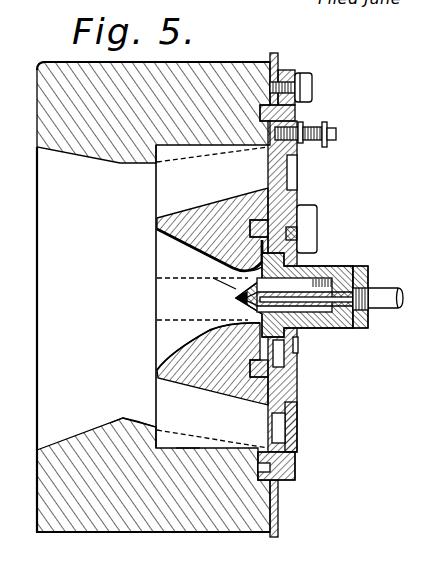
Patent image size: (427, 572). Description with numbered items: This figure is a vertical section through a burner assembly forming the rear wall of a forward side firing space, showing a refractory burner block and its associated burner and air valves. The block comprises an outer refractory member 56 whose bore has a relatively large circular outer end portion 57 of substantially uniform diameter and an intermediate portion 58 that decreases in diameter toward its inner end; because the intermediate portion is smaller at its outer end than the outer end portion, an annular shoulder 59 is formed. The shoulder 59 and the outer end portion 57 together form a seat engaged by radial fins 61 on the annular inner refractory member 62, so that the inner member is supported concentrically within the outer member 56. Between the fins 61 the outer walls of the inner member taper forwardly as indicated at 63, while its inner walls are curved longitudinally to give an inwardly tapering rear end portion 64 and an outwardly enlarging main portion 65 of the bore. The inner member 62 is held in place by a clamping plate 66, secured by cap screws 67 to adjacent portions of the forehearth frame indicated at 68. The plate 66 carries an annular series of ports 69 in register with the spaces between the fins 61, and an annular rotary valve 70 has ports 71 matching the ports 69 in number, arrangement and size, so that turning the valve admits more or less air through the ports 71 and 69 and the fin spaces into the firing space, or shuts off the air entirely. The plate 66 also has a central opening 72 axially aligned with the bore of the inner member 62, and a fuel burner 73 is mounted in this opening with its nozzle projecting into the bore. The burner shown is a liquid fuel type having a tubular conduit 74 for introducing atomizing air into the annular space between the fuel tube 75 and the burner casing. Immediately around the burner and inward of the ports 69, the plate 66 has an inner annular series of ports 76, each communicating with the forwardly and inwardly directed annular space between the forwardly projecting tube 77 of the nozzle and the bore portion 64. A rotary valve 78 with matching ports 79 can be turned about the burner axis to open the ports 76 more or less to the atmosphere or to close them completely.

The outer refractory member 56 is at (224, 513).
The outer end portion 57 is at (176, 448).
The intermediate portion 58 is at (123, 417).
The annular shoulder 59 is at (160, 432).
The radial fins 61 is at (172, 188).
The inner refractory member 62 is at (178, 224).
The forwardly tapering outer walls 63 is at (208, 207).
The inwardly tapering rear end portion 64 is at (213, 278).
The outwardly enlarging main portion 65 is at (187, 345).
The clamping plate 66 is at (287, 385).
The cap screws 67 is at (303, 87).
The forehearth frame parts 68 is at (278, 60).
The ports 69 is at (278, 433).
The annular rotary valve 70 is at (297, 423).
The ports 71 is at (294, 166).
The central opening 72 is at (308, 265).
The fuel burner 73 is at (355, 264).
The tubular conduit 74 is at (369, 272).
The fuel tube 75 is at (318, 308).
The inner annular series of ports 76 is at (282, 353).
The forwardly projecting tube 77 is at (202, 299).
The rotary valve 78 is at (313, 213).
The ports 79 is at (293, 241).